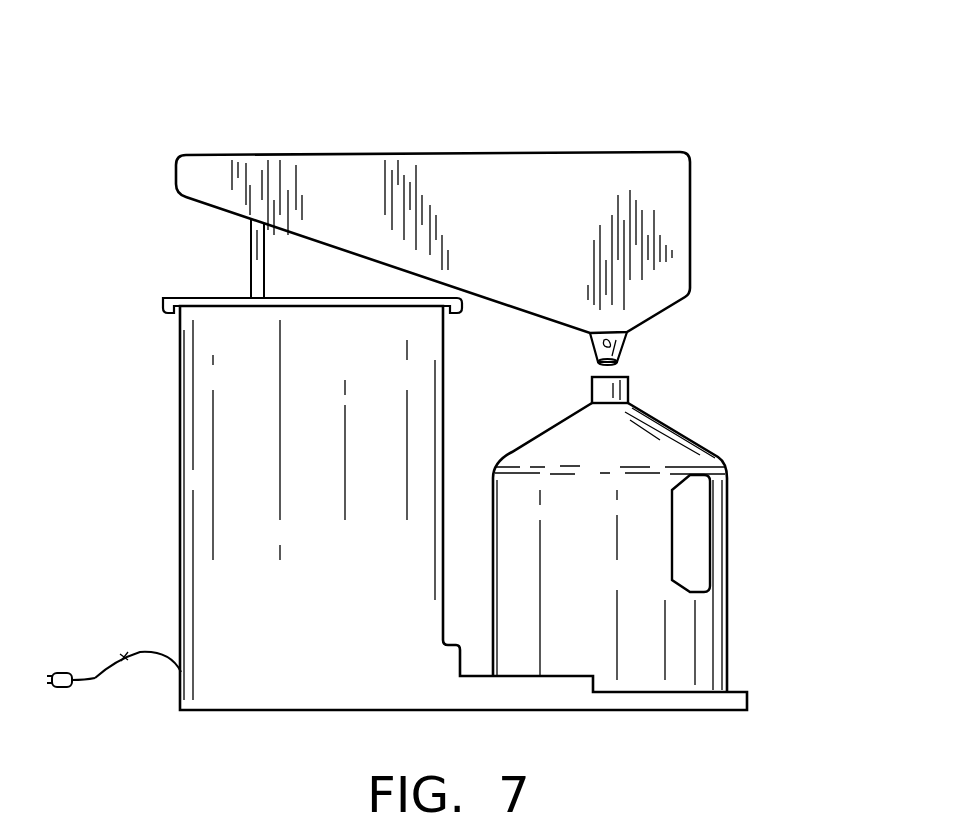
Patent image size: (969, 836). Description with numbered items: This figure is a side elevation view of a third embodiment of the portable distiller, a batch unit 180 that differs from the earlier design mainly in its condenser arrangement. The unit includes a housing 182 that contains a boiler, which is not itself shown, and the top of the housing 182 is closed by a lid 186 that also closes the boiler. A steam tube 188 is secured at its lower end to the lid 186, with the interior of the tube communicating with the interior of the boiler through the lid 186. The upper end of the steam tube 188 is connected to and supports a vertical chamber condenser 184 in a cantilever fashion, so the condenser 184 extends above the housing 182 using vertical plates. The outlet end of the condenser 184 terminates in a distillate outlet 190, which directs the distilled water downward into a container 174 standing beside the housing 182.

The container 174 is at (720, 528).
The batch unit 180 is at (395, 120).
The housing 182 is at (180, 455).
The vertical chamber condenser 184 is at (565, 197).
The lid 186 is at (193, 298).
The steam tube 188 is at (253, 261).
The distillate outlet 190 is at (617, 347).